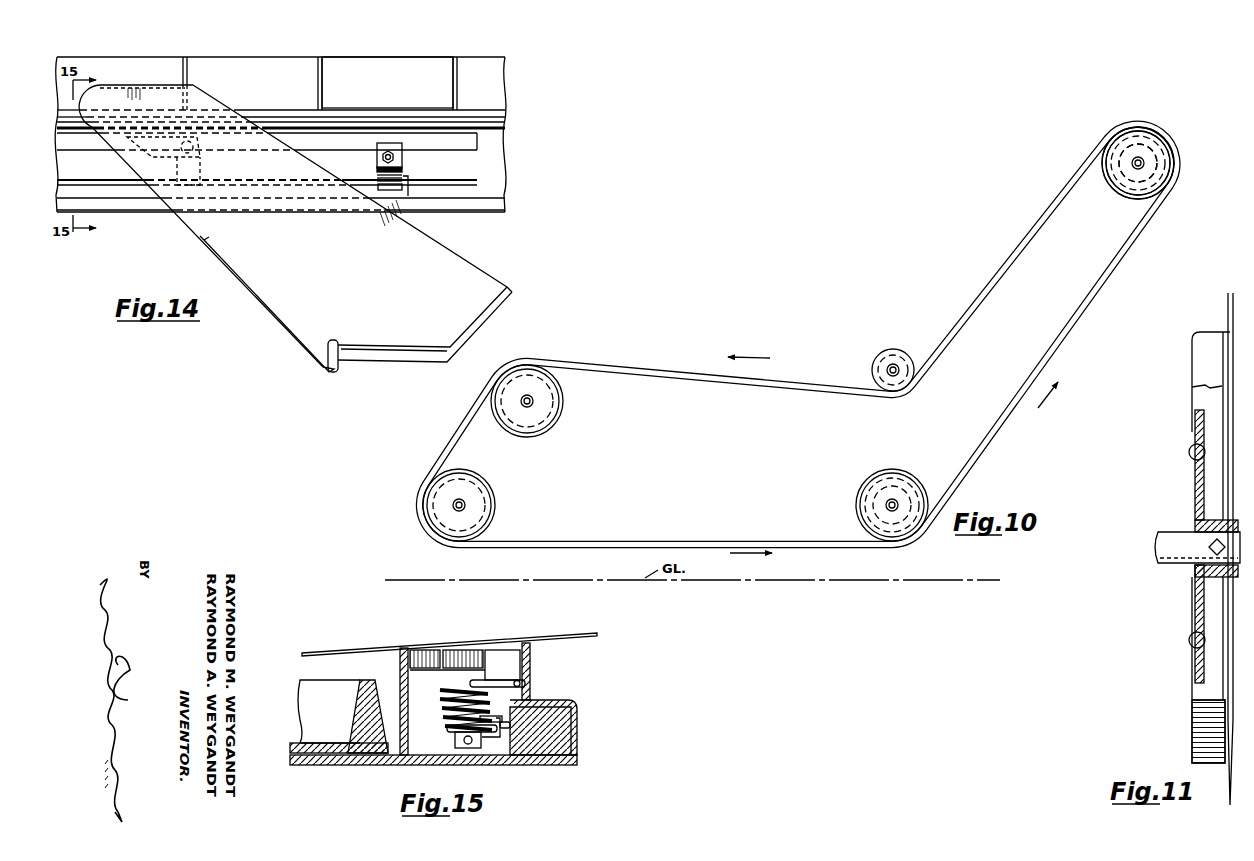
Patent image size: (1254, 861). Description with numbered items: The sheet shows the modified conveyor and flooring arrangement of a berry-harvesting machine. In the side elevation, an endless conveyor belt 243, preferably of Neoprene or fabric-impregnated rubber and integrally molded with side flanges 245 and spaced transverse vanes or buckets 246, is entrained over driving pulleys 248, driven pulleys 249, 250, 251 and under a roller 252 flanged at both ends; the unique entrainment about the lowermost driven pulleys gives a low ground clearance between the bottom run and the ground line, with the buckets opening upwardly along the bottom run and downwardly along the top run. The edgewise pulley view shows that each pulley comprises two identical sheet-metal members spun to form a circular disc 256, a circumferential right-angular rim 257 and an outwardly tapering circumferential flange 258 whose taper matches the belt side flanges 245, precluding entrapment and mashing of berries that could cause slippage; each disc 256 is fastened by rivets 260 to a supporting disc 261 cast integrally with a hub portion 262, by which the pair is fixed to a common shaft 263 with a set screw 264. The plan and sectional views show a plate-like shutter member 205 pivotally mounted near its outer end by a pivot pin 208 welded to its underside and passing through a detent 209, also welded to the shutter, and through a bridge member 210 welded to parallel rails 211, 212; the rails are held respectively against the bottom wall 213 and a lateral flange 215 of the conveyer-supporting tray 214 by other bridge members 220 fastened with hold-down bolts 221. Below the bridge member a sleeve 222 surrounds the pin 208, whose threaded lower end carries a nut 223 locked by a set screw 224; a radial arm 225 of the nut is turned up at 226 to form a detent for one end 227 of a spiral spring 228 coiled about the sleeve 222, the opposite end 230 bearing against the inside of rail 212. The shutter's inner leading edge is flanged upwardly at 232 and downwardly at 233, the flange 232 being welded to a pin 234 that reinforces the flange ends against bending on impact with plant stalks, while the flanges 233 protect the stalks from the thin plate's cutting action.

In FIG. 14, the shutter member 205 is at (326, 255).
In FIG. 15, the shutter member 205 is at (560, 636).
In FIG. 14, the pivot pin 208 is at (196, 150).
In FIG. 15, the pivot pin 208 is at (468, 650).
In FIG. 14, the detent 209 is at (122, 166).
In FIG. 15, the detent 209 is at (428, 650).
In FIG. 14, the bridge member 210 is at (202, 171).
In FIG. 15, the bridge member 210 is at (495, 675).
In FIG. 14, the rail 211 is at (415, 150).
In FIG. 15, the rail 211 is at (400, 672).
In FIG. 14, the rail 212 is at (460, 190).
In FIG. 15, the rail 212 is at (530, 660).
In FIG. 14, the bottom wall 213 is at (505, 150).
In FIG. 15, the bottom wall 213 is at (352, 765).
In FIG. 14, the conveyer-supporting tray 214 is at (506, 95).
In FIG. 15, the conveyer-supporting tray 214 is at (508, 768).
In FIG. 14, the lateral flange 215 is at (505, 193).
In FIG. 15, the lateral flange 215 is at (570, 700).
In FIG. 14, the bridge member 220 is at (406, 191).
In FIG. 14, the hold-down bolt 221 is at (376, 161).
In FIG. 15, the sleeve 222 is at (447, 728).
In FIG. 15, the nut 223 is at (455, 744).
In FIG. 15, the set screw 224 is at (473, 743).
In FIG. 15, the radial arm 225 is at (507, 730).
In FIG. 15, the upturned end 226 is at (502, 718).
In FIG. 15, the spring end 227 is at (511, 726).
In FIG. 15, the spiral spring 228 is at (448, 699).
In FIG. 15, the spring end 230 is at (528, 686).
In FIG. 14, the upward flange 232 is at (458, 345).
In FIG. 14, the downward flange 233 is at (300, 342).
In FIG. 14, the pin 234 is at (335, 340).
In FIG. 14, the endless conveyor belt 243 is at (405, 83).
In FIG. 10, the endless conveyor belt 243 is at (1072, 322).
In FIG. 15, the endless conveyor belt 243 is at (300, 743).
In FIG. 14, the side flange 245 is at (255, 116).
In FIG. 15, the side flange 245 is at (360, 712).
In FIG. 14, the transverse vane or bucket 246 is at (188, 78).
In FIG. 15, the transverse vane or bucket 246 is at (300, 705).
In FIG. 10, the driving pulley 248 is at (1172, 135).
In FIG. 10, the driven pulley 249 is at (853, 510).
In FIG. 10, the driven pulley 250 is at (497, 505).
In FIG. 10, the driven pulley 251 is at (560, 428).
In FIG. 10, the roller 252 is at (896, 348).
In FIG. 11, the circular disc 256 is at (1192, 376).
In FIG. 10, the circumferential right-angular rim 257 is at (1118, 192).
In FIG. 11, the circumferential right-angular rim 257 is at (1205, 332).
In FIG. 10, the tapering circumferential flange 258 is at (1106, 180).
In FIG. 11, the tapering circumferential flange 258 is at (1229, 300).
In FIG. 11, the rivet 260 is at (1190, 452).
In FIG. 10, the supporting disc 261 is at (1130, 192).
In FIG. 11, the supporting disc 261 is at (1200, 487).
In FIG. 10, the hub portion 262 is at (1144, 160).
In FIG. 11, the hub portion 262 is at (1198, 584).
In FIG. 10, the common shaft 263 is at (1144, 166).
In FIG. 11, the common shaft 263 is at (1180, 534).
In FIG. 11, the set screw 264 is at (1201, 547).